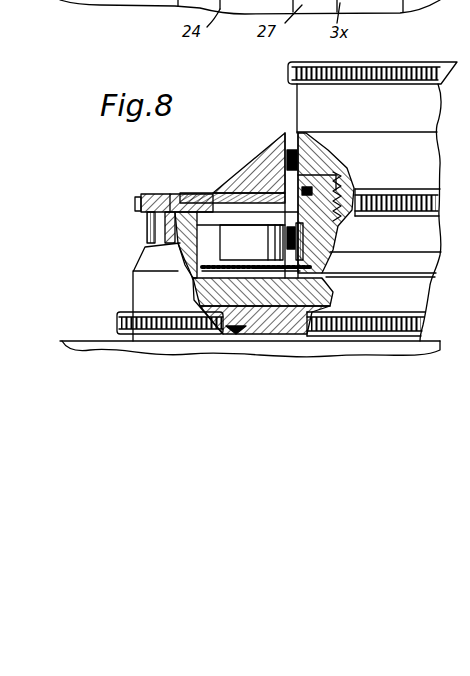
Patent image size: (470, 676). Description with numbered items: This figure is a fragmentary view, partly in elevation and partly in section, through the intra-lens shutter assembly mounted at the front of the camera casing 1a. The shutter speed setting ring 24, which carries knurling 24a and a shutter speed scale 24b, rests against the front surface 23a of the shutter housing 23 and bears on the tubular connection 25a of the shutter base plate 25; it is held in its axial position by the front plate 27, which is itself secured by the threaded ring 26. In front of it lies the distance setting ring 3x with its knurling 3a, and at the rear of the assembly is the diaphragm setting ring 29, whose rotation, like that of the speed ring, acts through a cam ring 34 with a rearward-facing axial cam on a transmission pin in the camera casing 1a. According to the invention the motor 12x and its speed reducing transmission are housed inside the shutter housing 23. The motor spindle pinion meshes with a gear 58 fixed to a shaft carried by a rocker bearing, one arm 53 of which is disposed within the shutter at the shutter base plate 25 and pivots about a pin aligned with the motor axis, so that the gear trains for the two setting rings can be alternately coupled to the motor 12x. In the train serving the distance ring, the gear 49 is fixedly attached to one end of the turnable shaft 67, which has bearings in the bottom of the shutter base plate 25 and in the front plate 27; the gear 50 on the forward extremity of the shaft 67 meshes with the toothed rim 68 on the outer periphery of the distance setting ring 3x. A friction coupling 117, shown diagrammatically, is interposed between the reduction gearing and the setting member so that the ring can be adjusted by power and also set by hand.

The knurling 3a is at (290, 71).
The distance setting ring 3x is at (302, 94).
The front plate 27 is at (260, 163).
The threaded ring 26 is at (322, 158).
The motor 12x is at (203, 193).
The shutter speed setting ring 24 is at (138, 197).
The front surface 23a is at (167, 192).
The knurling 24a is at (135, 201).
The shutter speed scale 24b is at (147, 220).
The cam ring 34 is at (165, 240).
The shutter housing 23 is at (180, 257).
The gear 58 is at (212, 278).
The gear 50 is at (287, 146).
The toothed rim 68 is at (306, 133).
The turnable shaft 67 is at (300, 247).
The friction coupling 117 is at (300, 232).
The gear 49 is at (312, 268).
The shutter base plate 25 is at (333, 297).
The pivoted arm 53 is at (231, 279).
The tubular connection 25a is at (335, 202).
The diaphragm setting ring 29 is at (138, 288).
The camera casing 1a is at (88, 347).